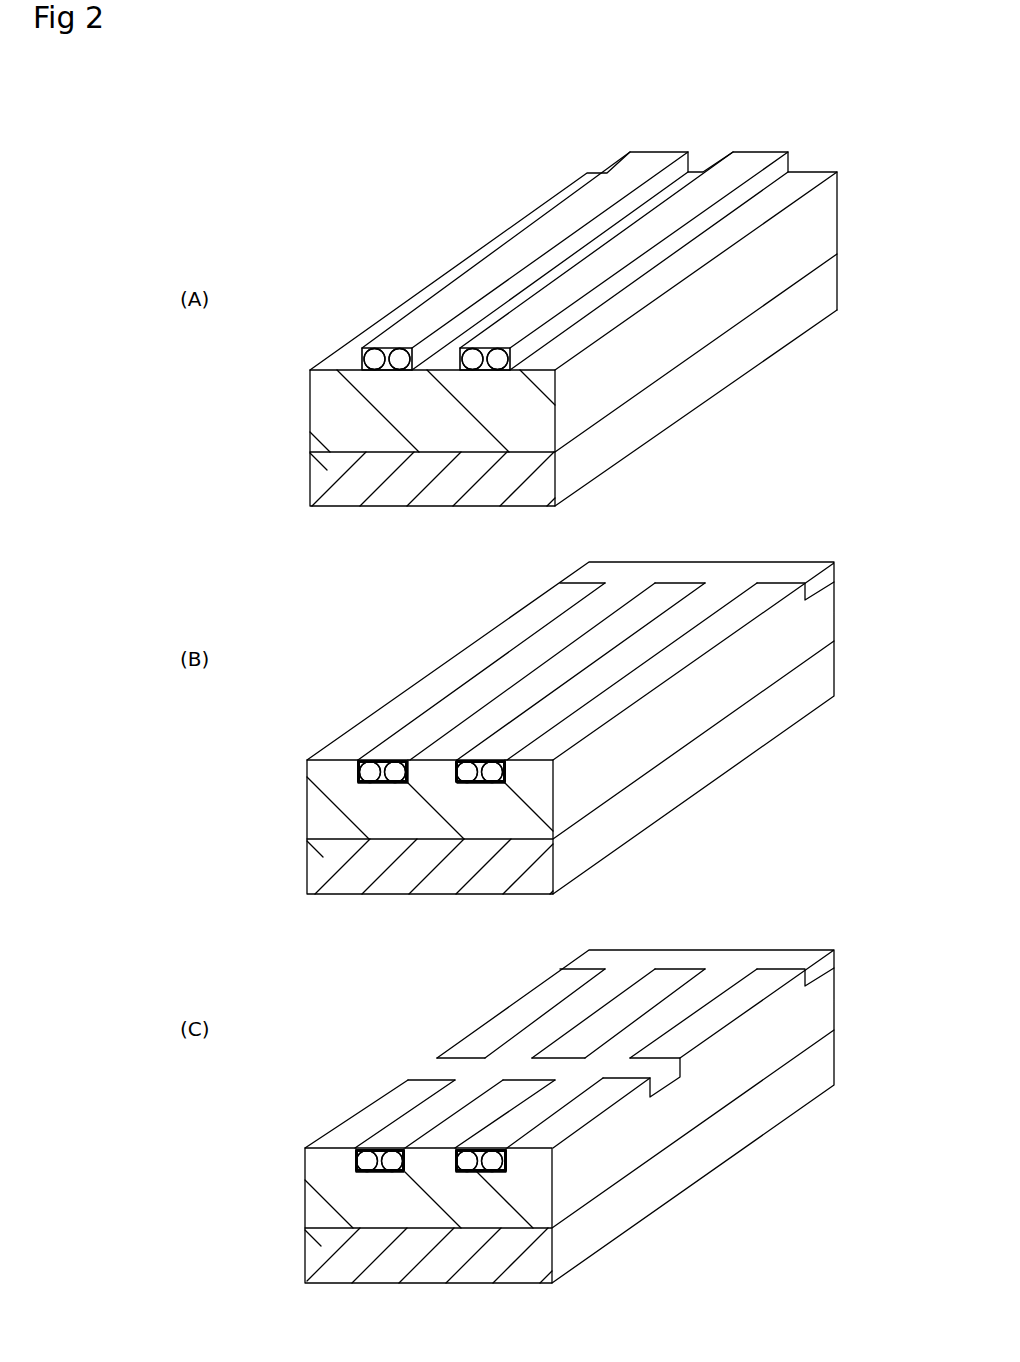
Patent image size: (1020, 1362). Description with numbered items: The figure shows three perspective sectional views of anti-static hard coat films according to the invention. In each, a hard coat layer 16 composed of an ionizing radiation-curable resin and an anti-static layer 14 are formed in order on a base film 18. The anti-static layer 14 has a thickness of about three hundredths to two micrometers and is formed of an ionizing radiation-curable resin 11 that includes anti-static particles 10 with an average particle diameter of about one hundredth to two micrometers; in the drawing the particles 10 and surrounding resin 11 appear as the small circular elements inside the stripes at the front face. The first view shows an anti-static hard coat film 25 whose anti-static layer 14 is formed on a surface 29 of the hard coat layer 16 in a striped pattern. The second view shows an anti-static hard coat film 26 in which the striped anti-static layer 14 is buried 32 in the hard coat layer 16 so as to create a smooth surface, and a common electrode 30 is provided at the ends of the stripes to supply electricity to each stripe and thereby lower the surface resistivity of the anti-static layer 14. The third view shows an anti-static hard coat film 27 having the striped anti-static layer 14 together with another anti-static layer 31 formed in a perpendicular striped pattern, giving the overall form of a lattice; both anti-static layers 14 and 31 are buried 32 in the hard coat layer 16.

The anti-static particles 10 is at (374, 361).
The ionizing radiation-curable resin 11 is at (380, 351).
The anti-static layer 14 is at (319, 293).
The hard coat layer 16 is at (516, 430).
The base film 18 is at (522, 487).
The anti-static hard coat film 25 is at (835, 152).
The anti-static hard coat film 26 is at (815, 533).
The anti-static hard coat film 27 is at (815, 923).
The surface of the hard coat layer 29 is at (667, 277).
The common electrode 30 is at (684, 573).
The another anti-static layer 31 is at (432, 1065).
The buried portion 32 is at (507, 780).